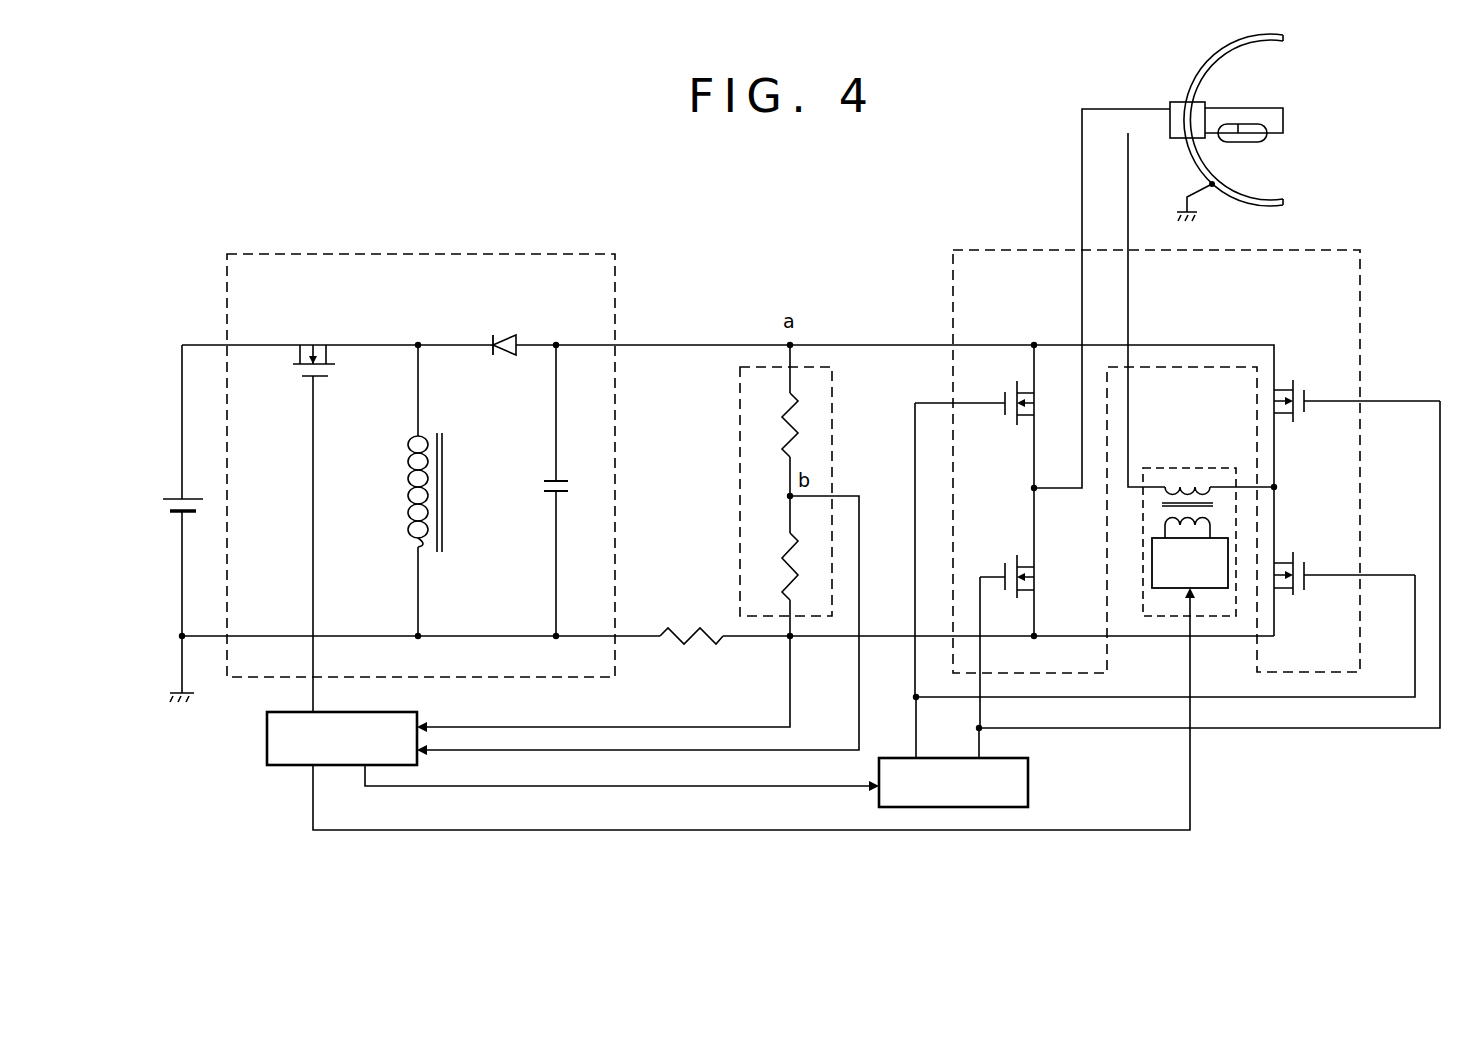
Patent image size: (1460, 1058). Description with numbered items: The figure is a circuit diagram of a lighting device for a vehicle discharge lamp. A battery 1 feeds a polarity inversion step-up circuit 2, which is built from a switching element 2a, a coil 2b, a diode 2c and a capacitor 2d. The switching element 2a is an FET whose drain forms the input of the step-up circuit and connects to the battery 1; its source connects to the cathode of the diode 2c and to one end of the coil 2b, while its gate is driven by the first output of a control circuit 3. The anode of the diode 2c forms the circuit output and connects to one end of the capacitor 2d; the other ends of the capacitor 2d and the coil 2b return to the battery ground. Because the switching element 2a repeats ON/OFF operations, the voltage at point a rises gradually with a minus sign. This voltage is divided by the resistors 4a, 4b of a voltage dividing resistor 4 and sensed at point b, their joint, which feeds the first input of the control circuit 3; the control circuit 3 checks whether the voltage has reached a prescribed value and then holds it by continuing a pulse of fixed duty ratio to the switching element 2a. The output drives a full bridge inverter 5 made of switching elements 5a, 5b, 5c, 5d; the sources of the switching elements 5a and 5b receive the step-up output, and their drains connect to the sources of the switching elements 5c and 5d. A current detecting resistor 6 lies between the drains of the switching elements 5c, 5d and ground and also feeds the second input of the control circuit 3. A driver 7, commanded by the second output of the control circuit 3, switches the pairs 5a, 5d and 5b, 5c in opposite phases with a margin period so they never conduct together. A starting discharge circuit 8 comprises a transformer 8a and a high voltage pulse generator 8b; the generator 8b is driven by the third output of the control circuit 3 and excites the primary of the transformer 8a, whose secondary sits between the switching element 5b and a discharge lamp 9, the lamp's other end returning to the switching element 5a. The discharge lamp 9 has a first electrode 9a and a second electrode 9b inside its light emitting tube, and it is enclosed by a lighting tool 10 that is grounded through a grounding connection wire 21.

The battery 1 is at (172, 490).
The polarity inversion step-up circuit 2 is at (505, 252).
The switching element 2a is at (335, 372).
The coil 2b is at (408, 514).
The diode 2c is at (503, 362).
The capacitor 2d is at (543, 481).
The control circuit 3 is at (267, 736).
The voltage dividing resistor 4 is at (740, 395).
The resistor 4a is at (762, 430).
The resistor 4b is at (772, 553).
The full bridge inverter 5 is at (1025, 250).
The switching element 5a is at (1010, 424).
The switching element 5b is at (1298, 383).
The switching element 5c is at (1010, 550).
The switching element 5d is at (1299, 594).
The current detecting resistor 6 is at (700, 650).
The driver 7 is at (1030, 778).
The starting discharge circuit 8 is at (1168, 468).
The transformer 8a is at (1215, 509).
The high voltage pulse generator 8b is at (1173, 577).
The discharge lamp 9 is at (1290, 110).
The first electrode 9a is at (1255, 140).
The second electrode 9b is at (1232, 127).
The lighting tool 10 is at (1203, 65).
The grounding connection wire 21 is at (1205, 210).